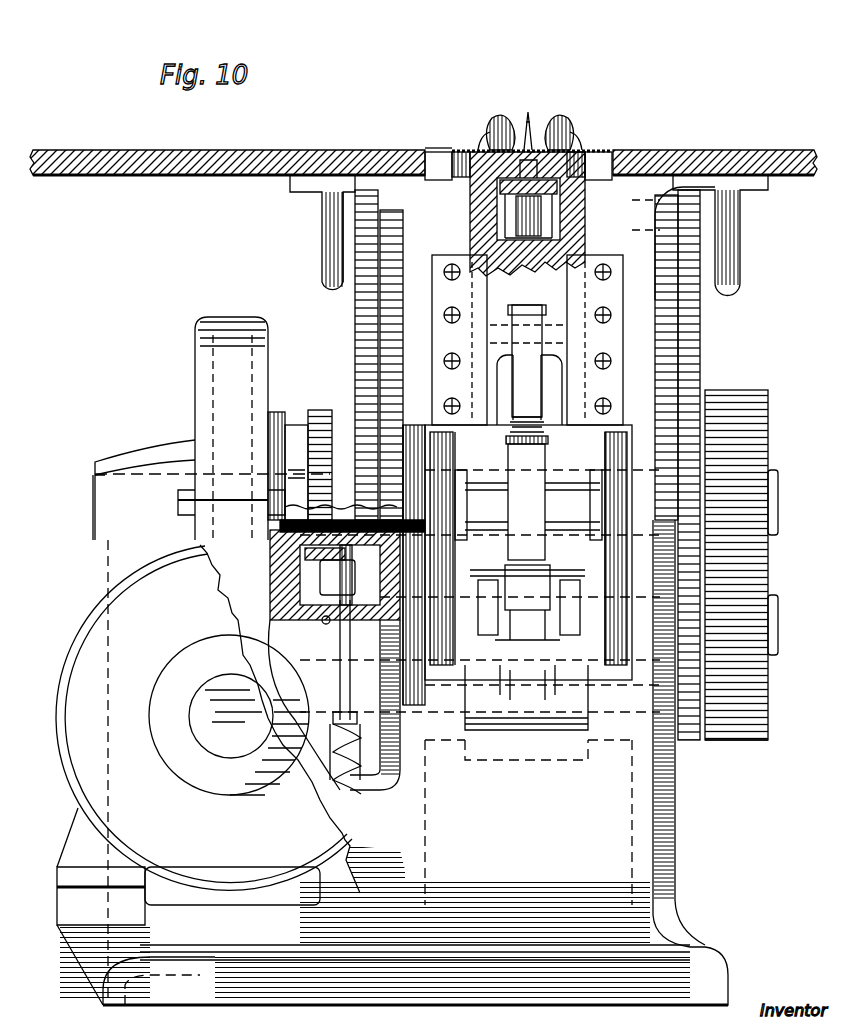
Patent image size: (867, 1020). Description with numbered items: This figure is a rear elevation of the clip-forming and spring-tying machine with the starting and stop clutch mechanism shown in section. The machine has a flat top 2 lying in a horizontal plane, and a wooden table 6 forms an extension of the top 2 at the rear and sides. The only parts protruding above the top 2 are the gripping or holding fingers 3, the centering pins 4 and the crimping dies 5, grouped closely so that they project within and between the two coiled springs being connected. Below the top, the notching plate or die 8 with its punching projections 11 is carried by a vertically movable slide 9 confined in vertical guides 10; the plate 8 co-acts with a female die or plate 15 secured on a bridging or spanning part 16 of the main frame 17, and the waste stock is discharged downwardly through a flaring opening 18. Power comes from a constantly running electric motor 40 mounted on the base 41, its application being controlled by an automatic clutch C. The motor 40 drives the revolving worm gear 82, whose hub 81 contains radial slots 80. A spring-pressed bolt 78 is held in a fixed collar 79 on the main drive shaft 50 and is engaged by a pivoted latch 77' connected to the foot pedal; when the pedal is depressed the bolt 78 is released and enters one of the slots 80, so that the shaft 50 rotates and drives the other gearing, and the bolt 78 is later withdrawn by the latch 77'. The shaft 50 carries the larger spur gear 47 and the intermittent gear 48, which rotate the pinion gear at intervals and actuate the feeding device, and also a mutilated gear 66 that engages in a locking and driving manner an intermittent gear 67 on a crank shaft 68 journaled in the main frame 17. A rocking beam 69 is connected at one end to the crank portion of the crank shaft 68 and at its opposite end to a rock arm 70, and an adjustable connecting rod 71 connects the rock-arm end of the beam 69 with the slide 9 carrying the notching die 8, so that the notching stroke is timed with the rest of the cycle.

The flat top 2 is at (430, 150).
The gripping or holding fingers 3 is at (558, 117).
The centering pins 4 is at (527, 121).
The crimping dies 5 is at (530, 132).
The wooden table 6 is at (118, 176).
The notching plate or die 8 is at (582, 150).
The vertically movable slide 9 is at (480, 227).
The vertical guides 10 is at (452, 288).
The punching projections 11 is at (470, 167).
The female die or plate 15 is at (500, 184).
The bridging or spanning part 16 is at (560, 205).
The main frame 17 is at (639, 205).
The flaring opening 18 is at (497, 205).
The electric motor 40 is at (208, 770).
The base 41 is at (708, 962).
The spur gear 47 is at (355, 317).
The intermittent gear 48 is at (380, 337).
The main drive shaft 50 is at (778, 498).
The mutilated gear 66 is at (768, 438).
The intermittent gear 67 is at (768, 681).
The crank shaft 68 is at (778, 636).
The rocking beam 69 is at (563, 575).
The rock arm 70 is at (540, 680).
The adjustable connecting rod 71 is at (528, 502).
The pivoted latch 77' is at (334, 697).
The spring-pressed bolt 78 is at (272, 568).
The fixed collar 79 is at (333, 450).
The radial slots 80 is at (272, 548).
The hub 81 is at (293, 412).
The worm gear 82 is at (213, 382).
The automatic clutch C is at (298, 490).